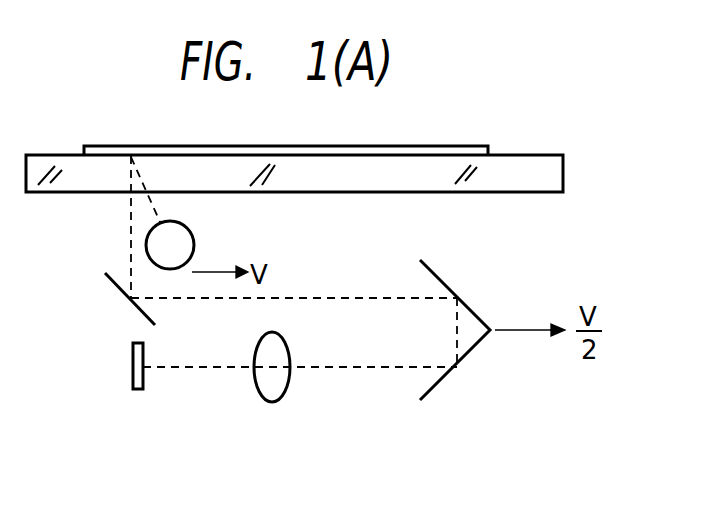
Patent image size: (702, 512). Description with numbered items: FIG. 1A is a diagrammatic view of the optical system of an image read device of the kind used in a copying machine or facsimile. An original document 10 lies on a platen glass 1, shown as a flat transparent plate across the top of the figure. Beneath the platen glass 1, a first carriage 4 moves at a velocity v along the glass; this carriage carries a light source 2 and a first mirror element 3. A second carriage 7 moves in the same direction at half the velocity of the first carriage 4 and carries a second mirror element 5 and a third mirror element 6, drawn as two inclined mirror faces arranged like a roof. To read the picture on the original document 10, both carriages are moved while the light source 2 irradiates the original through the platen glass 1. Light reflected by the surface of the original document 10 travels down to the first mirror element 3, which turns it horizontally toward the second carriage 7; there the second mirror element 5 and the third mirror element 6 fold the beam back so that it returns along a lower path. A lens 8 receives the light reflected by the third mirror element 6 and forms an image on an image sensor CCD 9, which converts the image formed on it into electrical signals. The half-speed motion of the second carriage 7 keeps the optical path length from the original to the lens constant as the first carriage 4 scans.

The platen glass 1 is at (557, 175).
The original document 10 is at (180, 150).
The light source 2 is at (184, 241).
The first mirror element 3 is at (124, 296).
The first carriage 4 is at (110, 257).
The second mirror element 5 is at (468, 308).
The third mirror element 6 is at (462, 358).
The second carriage 7 is at (458, 275).
The lens 8 is at (275, 401).
The image sensor CCD 9 is at (133, 372).